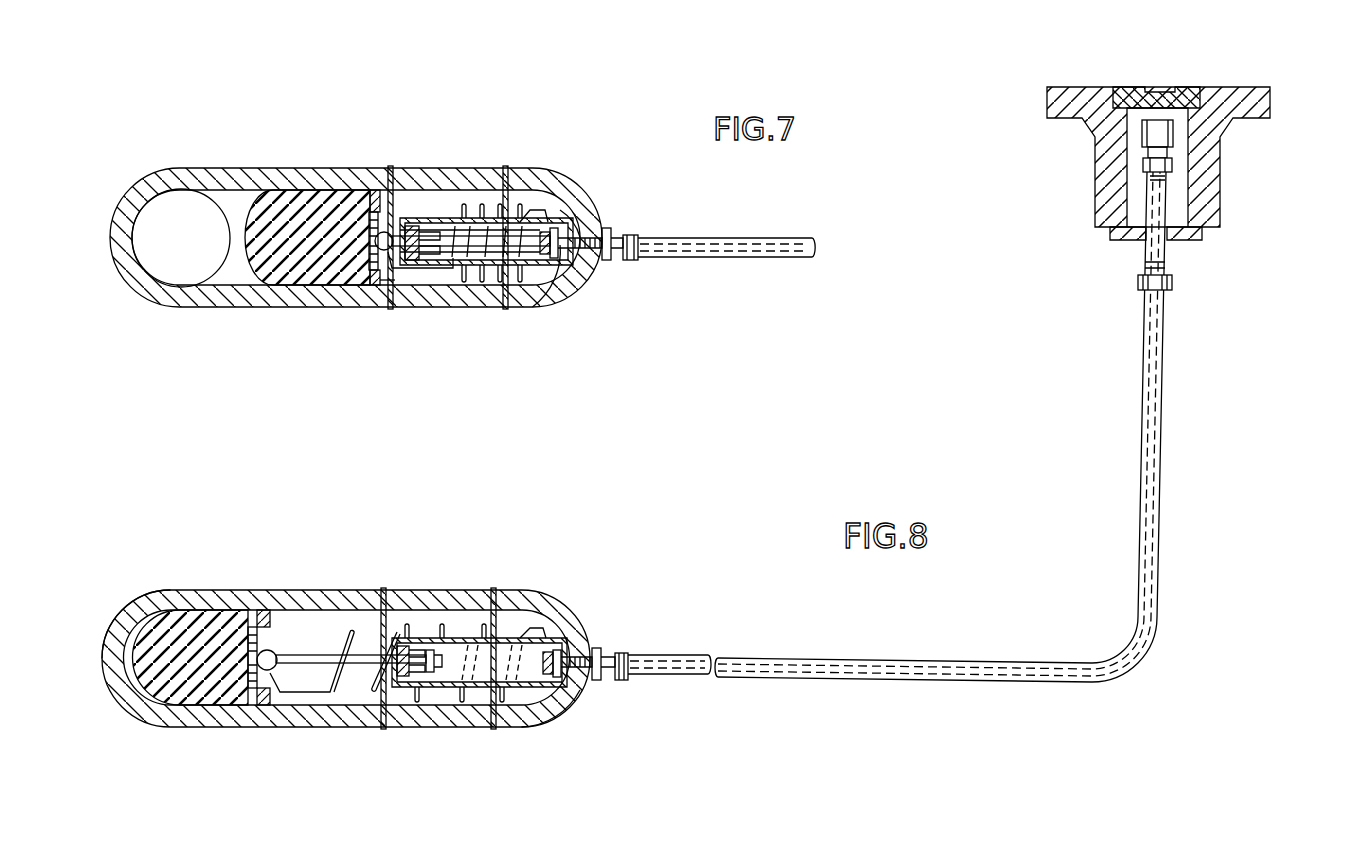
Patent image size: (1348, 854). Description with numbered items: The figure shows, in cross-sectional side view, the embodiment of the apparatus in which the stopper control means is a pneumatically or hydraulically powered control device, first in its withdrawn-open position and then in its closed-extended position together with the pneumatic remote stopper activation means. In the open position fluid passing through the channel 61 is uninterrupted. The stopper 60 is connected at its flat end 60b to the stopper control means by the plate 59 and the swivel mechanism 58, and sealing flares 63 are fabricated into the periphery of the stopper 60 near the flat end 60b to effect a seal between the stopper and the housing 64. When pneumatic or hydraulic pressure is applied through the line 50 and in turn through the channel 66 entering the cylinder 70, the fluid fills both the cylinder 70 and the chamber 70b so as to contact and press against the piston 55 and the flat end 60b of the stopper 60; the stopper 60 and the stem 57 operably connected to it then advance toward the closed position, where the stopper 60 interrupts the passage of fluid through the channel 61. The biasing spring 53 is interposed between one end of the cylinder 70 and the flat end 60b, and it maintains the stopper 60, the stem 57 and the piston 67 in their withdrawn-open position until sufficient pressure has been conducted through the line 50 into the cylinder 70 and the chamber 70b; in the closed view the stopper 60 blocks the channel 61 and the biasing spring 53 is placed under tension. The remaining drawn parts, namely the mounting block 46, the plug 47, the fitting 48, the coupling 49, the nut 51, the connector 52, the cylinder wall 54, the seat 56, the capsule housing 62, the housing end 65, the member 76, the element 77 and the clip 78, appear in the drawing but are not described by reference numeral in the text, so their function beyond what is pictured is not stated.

In FIG. 8, the mounting block 46 is at (1240, 107).
In FIG. 8, the plug 47 is at (1180, 87).
In FIG. 8, the tube fitting 48 is at (1177, 130).
In FIG. 8, the coupling 49 is at (1140, 278).
In FIG. 8, the line 50 is at (1095, 680).
In FIG. 8, the nut 51 is at (603, 677).
In FIG. 8, the tube connector 52 is at (550, 637).
In FIG. 7, the biasing spring 53 is at (492, 268).
In FIG. 8, the biasing spring 53 is at (550, 640).
In FIG. 7, the cylinder wall 54 is at (452, 218).
In FIG. 8, the cylinder wall 54 is at (467, 640).
In FIG. 7, the piston 55 is at (583, 205).
In FIG. 8, the piston 55 is at (408, 688).
In FIG. 7, the spring seat 56 is at (422, 218).
In FIG. 8, the spring seat 56 is at (395, 690).
In FIG. 7, the stem 57 is at (425, 250).
In FIG. 8, the stem 57 is at (325, 650).
In FIG. 7, the swivel mechanism 58 is at (385, 270).
In FIG. 8, the swivel mechanism 58 is at (292, 612).
In FIG. 7, the plate 59 is at (340, 290).
In FIG. 8, the plate 59 is at (253, 612).
In FIG. 7, the stopper 60 is at (336, 192).
In FIG. 8, the stopper 60 is at (173, 612).
In FIG. 7, the flat end 60b is at (377, 210).
In FIG. 7, the channel 61 is at (173, 260).
In FIG. 8, the channel 61 is at (108, 613).
In FIG. 7, the capsule housing 62 is at (222, 168).
In FIG. 8, the capsule housing 62 is at (310, 717).
In FIG. 7, the sealing flares 63 is at (376, 275).
In FIG. 8, the sealing flares 63 is at (253, 702).
In FIG. 7, the housing 64 is at (505, 182).
In FIG. 8, the housing 64 is at (390, 636).
In FIG. 7, the housing end 65 is at (582, 285).
In FIG. 8, the housing end 65 is at (560, 710).
In FIG. 7, the channel 66 is at (597, 223).
In FIG. 8, the channel 66 is at (592, 650).
In FIG. 7, the piston 67 is at (545, 283).
In FIG. 8, the piston 67 is at (478, 690).
In FIG. 7, the cylinder 70 is at (552, 262).
In FIG. 8, the cylinder 70 is at (442, 668).
In FIG. 7, the chamber 70b is at (527, 200).
In FIG. 8, the valve member 76 is at (407, 700).
In FIG. 7, the stem 77 is at (432, 230).
In FIG. 8, the spring clip 78 is at (425, 642).